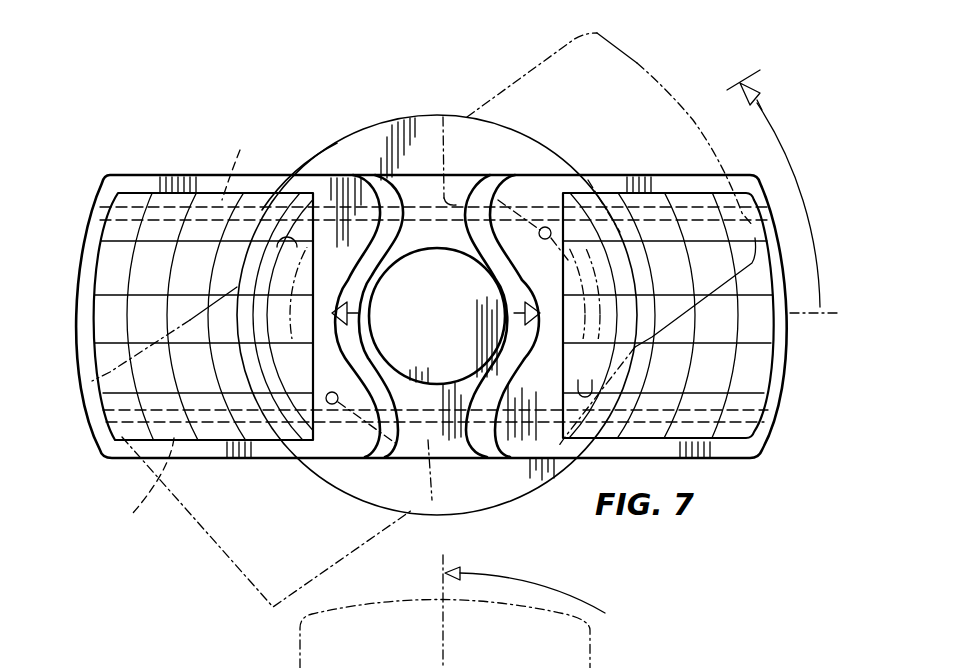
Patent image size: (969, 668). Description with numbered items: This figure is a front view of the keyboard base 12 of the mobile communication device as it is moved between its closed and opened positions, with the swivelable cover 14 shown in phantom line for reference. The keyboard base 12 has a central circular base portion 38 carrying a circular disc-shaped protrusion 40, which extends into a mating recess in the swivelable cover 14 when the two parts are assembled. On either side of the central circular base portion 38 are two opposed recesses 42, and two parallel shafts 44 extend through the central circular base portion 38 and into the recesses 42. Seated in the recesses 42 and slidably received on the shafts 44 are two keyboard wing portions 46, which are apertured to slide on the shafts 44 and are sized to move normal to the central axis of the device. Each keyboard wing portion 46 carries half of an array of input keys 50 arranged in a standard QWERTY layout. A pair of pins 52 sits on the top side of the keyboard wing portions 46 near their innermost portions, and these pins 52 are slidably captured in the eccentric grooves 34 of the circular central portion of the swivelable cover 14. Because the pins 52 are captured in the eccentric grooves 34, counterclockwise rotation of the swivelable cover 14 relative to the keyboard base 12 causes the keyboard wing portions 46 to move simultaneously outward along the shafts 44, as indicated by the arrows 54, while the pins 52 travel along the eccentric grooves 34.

The keyboard base 12 is at (470, 493).
The swivelable cover 14 is at (605, 35).
The eccentric grooves 34 is at (443, 117).
The central circular base portion 38 is at (337, 143).
The circular disc-shaped protrusion 40 is at (437, 357).
The recesses 42 is at (367, 460).
The shafts 44 is at (240, 153).
The keyboard wing portions 46 is at (76, 287).
The input keys 50 is at (112, 363).
The pins 52 is at (548, 228).
The arrows 54 is at (490, 293).